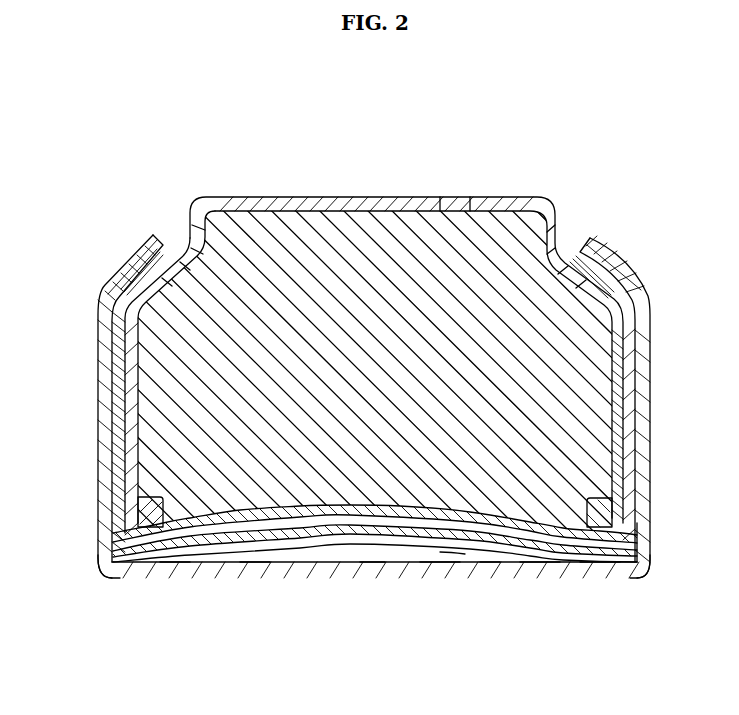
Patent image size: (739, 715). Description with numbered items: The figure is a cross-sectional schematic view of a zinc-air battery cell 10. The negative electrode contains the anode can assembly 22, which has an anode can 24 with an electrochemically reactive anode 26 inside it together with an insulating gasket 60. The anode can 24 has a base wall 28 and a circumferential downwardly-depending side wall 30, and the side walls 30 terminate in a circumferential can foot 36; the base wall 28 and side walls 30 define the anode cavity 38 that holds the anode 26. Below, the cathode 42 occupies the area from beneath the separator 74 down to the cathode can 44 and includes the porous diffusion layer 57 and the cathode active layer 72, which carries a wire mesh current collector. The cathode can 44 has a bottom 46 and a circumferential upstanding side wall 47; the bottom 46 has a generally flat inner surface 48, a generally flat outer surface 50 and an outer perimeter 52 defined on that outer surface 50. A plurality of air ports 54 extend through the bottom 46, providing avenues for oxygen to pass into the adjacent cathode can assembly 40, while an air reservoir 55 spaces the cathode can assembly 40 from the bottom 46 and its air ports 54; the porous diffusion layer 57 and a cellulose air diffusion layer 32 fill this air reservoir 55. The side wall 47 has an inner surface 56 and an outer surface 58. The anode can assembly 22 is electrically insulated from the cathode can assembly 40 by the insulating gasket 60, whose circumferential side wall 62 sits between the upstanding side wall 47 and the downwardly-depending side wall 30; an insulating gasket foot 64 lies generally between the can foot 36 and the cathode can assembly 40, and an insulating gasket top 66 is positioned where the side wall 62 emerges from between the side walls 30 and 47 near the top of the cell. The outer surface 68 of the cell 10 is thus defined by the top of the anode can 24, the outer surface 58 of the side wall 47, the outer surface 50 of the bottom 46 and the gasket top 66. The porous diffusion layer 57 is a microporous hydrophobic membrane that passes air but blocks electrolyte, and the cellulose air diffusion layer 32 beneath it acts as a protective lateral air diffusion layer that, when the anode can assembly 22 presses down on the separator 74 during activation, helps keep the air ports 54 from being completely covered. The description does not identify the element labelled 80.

The cell 10 is at (221, 178).
The anode can assembly 22 is at (505, 185).
The anode can 24 is at (452, 186).
The anode 26 is at (348, 492).
The base wall 28 is at (322, 197).
The side wall 30 is at (635, 333).
The cellulose air diffusion layer 32 is at (388, 555).
The can foot 36 is at (126, 492).
The anode cavity 38 is at (374, 280).
The cathode can assembly 40 is at (437, 584).
The cathode 42 is at (305, 552).
The cathode can 44 is at (540, 584).
The bottom 46 is at (600, 584).
The side wall 47 is at (92, 367).
The inner surface 48 is at (136, 523).
The outer surface 50 is at (195, 580).
The outer perimeter 52 is at (104, 575).
The air ports 54 is at (255, 574).
The air reservoir 55 is at (458, 565).
The inner surface 56 is at (636, 372).
The porous diffusion layer 57 is at (341, 560).
The outer surface 58 is at (652, 412).
The insulating gasket 60 is at (114, 326).
The side wall 62 is at (120, 403).
The insulating gasket foot 64 is at (612, 526).
The insulating gasket top 66 is at (562, 262).
The outer surface 68 is at (262, 190).
The cathode active layer 72 is at (412, 560).
The separator 74 is at (173, 568).
The bottom right corner 80 is at (641, 572).